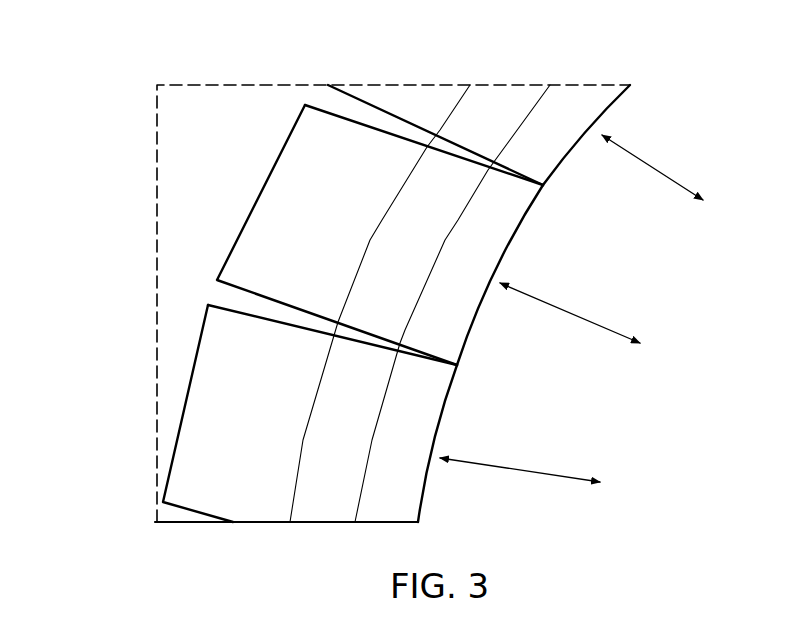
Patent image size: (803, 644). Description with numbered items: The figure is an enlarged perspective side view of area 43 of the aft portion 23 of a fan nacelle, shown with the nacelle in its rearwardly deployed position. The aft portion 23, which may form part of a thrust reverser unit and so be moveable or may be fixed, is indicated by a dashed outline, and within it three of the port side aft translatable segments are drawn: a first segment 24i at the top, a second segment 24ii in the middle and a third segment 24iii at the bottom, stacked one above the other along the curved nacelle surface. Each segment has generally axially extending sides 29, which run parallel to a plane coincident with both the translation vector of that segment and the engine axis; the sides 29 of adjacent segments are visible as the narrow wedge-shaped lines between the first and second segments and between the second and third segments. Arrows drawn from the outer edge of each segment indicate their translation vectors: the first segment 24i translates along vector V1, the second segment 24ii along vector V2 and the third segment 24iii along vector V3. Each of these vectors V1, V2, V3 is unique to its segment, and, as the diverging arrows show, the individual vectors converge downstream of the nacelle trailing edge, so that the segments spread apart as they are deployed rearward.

The aft portion 23 is at (235, 112).
The first port side aft translatable segment 24i is at (607, 97).
The second port side aft translatable segment 24ii is at (510, 217).
The third port side aft translatable segment 24iii is at (413, 498).
The axially extending sides 29 is at (380, 130).
The area 43 is at (114, 193).
The translation vector of first segment V1 is at (675, 188).
The translation vector of second segment V2 is at (591, 327).
The translation vector of third segment V3 is at (542, 481).